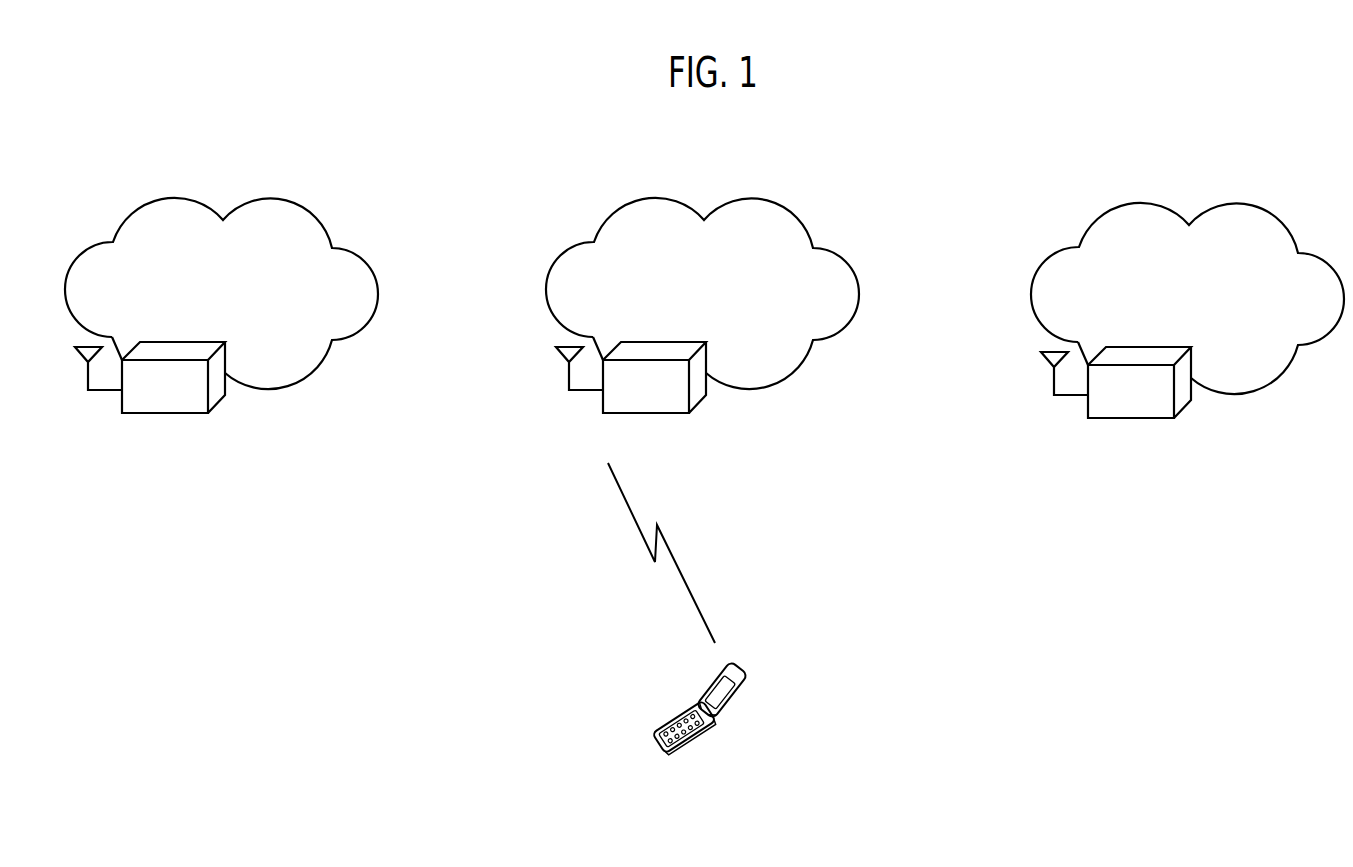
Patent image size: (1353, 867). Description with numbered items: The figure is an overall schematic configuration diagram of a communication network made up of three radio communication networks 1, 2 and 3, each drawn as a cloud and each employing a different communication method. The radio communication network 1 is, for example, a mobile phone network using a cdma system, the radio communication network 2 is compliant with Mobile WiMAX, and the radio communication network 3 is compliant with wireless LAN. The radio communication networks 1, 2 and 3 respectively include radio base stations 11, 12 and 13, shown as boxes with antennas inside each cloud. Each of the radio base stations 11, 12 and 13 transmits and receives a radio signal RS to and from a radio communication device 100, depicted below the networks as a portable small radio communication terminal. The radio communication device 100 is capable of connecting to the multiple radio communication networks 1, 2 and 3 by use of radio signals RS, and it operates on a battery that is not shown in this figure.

The radio communication network 1 is at (292, 203).
The radio communication network 2 is at (773, 203).
The radio communication network 3 is at (1259, 208).
The radio base station 11 is at (178, 350).
The radio base station 12 is at (660, 350).
The radio base station 13 is at (1145, 355).
The radio signal RS is at (688, 585).
The radio communication device 100 is at (708, 737).